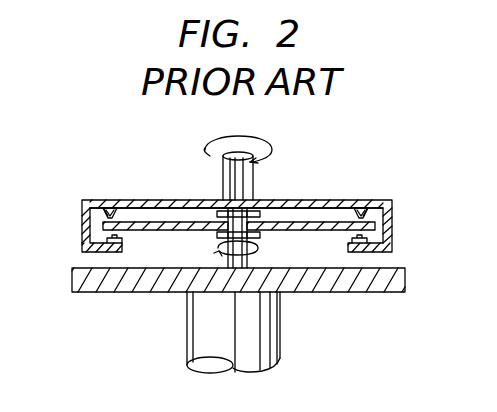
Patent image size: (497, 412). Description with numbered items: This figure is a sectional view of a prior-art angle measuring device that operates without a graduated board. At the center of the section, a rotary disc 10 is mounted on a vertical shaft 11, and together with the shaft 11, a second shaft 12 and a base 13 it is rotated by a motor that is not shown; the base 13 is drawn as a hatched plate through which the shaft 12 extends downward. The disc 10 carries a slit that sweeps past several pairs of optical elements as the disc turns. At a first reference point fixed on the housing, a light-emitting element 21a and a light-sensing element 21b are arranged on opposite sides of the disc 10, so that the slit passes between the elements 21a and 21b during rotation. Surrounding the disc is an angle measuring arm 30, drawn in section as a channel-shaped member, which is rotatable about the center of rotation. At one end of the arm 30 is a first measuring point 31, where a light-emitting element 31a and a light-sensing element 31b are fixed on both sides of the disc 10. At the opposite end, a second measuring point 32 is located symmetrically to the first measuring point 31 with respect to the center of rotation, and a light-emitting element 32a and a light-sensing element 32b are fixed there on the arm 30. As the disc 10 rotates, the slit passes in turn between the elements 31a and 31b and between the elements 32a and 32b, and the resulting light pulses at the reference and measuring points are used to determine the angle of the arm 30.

The rotary disc 10 is at (280, 221).
The shaft 11 is at (262, 240).
The shaft 12 is at (281, 350).
The base 13 is at (405, 279).
The light-emitting element 21a is at (223, 199).
The light-sensing element 21b is at (226, 246).
The angle measuring arm 30 is at (393, 211).
The first measuring point 31 is at (359, 207).
The light-emitting element 31a is at (364, 207).
The light-sensing element 31b is at (357, 239).
The second measuring point 32 is at (114, 207).
The light-emitting element 32a is at (107, 209).
The light-sensing element 32b is at (114, 240).